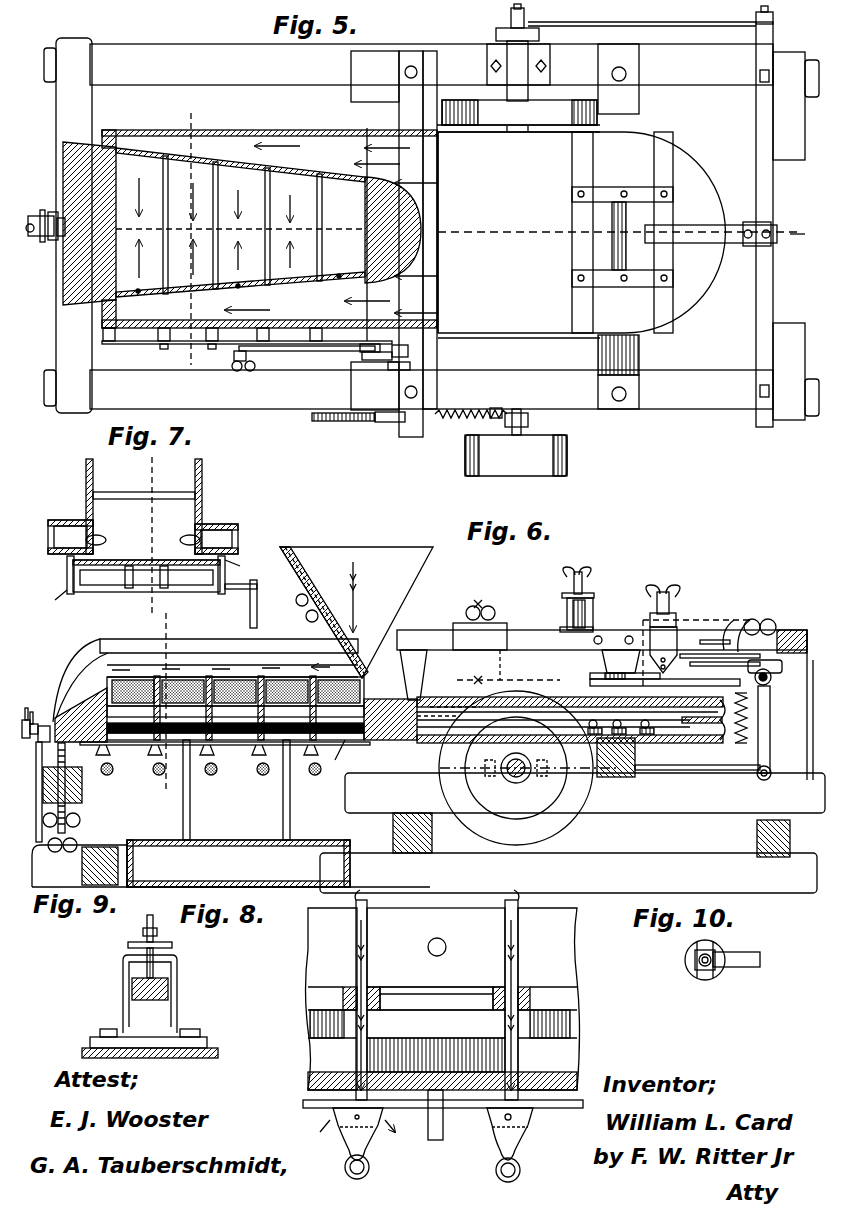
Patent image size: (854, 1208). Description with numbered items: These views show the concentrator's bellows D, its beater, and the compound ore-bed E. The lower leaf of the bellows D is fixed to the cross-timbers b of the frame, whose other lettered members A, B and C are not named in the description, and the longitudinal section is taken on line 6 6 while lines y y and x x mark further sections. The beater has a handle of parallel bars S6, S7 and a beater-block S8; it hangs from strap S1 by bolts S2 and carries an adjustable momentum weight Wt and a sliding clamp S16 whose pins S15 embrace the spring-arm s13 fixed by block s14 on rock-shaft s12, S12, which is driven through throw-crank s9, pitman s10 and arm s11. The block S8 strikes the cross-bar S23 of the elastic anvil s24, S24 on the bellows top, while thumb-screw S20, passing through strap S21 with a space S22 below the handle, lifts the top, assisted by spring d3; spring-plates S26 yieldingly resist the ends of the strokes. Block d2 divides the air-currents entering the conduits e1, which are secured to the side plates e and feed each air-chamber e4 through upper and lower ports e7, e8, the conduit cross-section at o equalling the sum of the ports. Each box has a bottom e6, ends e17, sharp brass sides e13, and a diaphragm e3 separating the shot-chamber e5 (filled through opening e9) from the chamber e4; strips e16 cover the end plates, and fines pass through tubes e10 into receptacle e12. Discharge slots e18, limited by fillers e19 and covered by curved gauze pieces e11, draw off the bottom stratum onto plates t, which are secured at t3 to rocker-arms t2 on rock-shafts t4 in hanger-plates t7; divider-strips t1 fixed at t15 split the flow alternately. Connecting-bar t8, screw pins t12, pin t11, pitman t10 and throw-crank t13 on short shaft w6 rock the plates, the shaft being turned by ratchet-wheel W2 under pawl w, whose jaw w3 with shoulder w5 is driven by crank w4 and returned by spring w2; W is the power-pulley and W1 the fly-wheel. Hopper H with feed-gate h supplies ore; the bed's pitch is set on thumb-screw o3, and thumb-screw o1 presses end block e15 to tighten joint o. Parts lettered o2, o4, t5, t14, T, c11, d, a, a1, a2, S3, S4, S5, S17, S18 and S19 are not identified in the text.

In FIG. 5, the frame side rail A is at (408, 225).
In FIG. 5, the cross block B is at (375, 230).
In FIG. 5, the cross-timbers of the frame b is at (519, 240).
In FIG. 7, the cross-timbers of the frame b is at (585, 793).
In FIG. 6, the cross-timbers of the frame b is at (616, 771).
In FIG. 5, the end block C is at (796, 236).
In FIG. 5, the bellows D is at (619, 235).
In FIG. 5, the power-pulley W is at (516, 455).
In FIG. 5, the fly-wheel W1 is at (518, 116).
In FIG. 6, the fly-wheel W1 is at (529, 768).
In FIG. 5, the ratchet-wheel W2 is at (358, 427).
In FIG. 5, the pawl w is at (485, 242).
In FIG. 5, the spiral spring w2 is at (450, 420).
In FIG. 5, the jaw of the pawl w3 is at (514, 410).
In FIG. 5, the crank w4 is at (528, 420).
In FIG. 5, the shoulder of the jaw w5 is at (481, 402).
In FIG. 5, the short shaft w6 is at (410, 366).
In FIG. 5, the adjustable throw-crank s9 is at (524, 10).
In FIG. 10, the adjustable throw-crank s9 is at (692, 966).
In FIG. 5, the pitman s10 is at (642, 14).
In FIG. 6, the pitman s10 is at (697, 760).
In FIG. 10, the pitman s10 is at (745, 967).
In FIG. 5, the arm s11 is at (773, 30).
In FIG. 6, the arm s11 is at (765, 733).
In FIG. 5, the rock-shaft s12 is at (773, 190).
In FIG. 5, the spring-arm s13 is at (711, 234).
In FIG. 5, the block s14 is at (766, 226).
In FIG. 5, the elastic anvil end bars s24 is at (622, 232).
In FIG. 5, the section line 6 6 is at (804, 235).
In FIG. 7, the side pieces e is at (205, 593).
In FIG. 5, the air-conduits e1 is at (278, 230).
In FIG. 7, the air-conduits e1 is at (146, 568).
In FIG. 8, the lower wire-gauze diaphragm e3 is at (436, 947).
In FIG. 5, the air-chamber e4 is at (240, 225).
In FIG. 7, the air-chamber e4 is at (171, 775).
In FIG. 8, the air-chamber e4 is at (568, 1025).
In FIG. 8, the shot-chamber e5 is at (443, 999).
In FIG. 7, the bottom e6 is at (230, 719).
In FIG. 8, the bottom e6 is at (442, 1080).
In FIG. 5, the upper air-entrance port e7 is at (236, 228).
In FIG. 7, the upper air-entrance port e7 is at (177, 537).
In FIG. 8, the upper air-entrance port e7 is at (436, 1024).
In FIG. 5, the lower air-entrance port e8 is at (287, 223).
In FIG. 7, the lower air-entrance port e8 is at (215, 657).
In FIG. 5, the opening e9 is at (237, 299).
In FIG. 8, the opening e9 is at (446, 947).
In FIG. 7, the tubes e10 is at (224, 790).
In FIG. 7, the curved gauze pieces e11 is at (380, 895).
In FIG. 8, the curved gauze pieces e11 is at (518, 902).
In FIG. 7, the receptacle e12 is at (238, 863).
In FIG. 7, the brass side pieces e13 is at (132, 508).
In FIG. 8, the brass side pieces e13 is at (436, 1000).
In FIG. 5, the end block e15 is at (250, 229).
In FIG. 7, the end block e15 is at (81, 715).
In FIG. 7, the strips e16 is at (198, 563).
In FIG. 5, the end pieces e17 is at (223, 225).
In FIG. 5, the discharge slots e18 is at (336, 217).
In FIG. 8, the discharge slots e18 is at (437, 1009).
In FIG. 5, the fillers e19 is at (240, 230).
In FIG. 7, the fillers e19 is at (143, 526).
In FIG. 5, the joint o is at (197, 227).
In FIG. 7, the joint o is at (340, 757).
In FIG. 5, the thumb-screw o1 is at (46, 240).
In FIG. 7, the thumb-screw o1 is at (30, 708).
In FIG. 7, the bracket o2 is at (38, 746).
In FIG. 5, the thumb-screw o3 is at (55, 236).
In FIG. 7, the thumb-screw o3 is at (184, 805).
In FIG. 7, the roller o4 is at (52, 821).
In FIG. 7, the plates t is at (145, 571).
In FIG. 8, the plates t is at (369, 1167).
In FIG. 8, the divider-strips t1 is at (577, 1125).
In FIG. 7, the rocker-arms t2 is at (146, 673).
In FIG. 8, the rocker-arms t2 is at (533, 1130).
In FIG. 7, the plate securing point t3 is at (225, 753).
In FIG. 8, the plate securing point t3 is at (505, 1118).
In FIG. 7, the rock-shafts t4 is at (241, 683).
In FIG. 8, the rock-shafts t4 is at (520, 1170).
In FIG. 5, the block t5 is at (103, 334).
In FIG. 7, the block t5 is at (268, 605).
In FIG. 7, the hanger-plates t7 is at (139, 571).
In FIG. 5, the connecting-bar t8 is at (188, 353).
In FIG. 5, the pitman t10 is at (307, 357).
In FIG. 5, the pin t11 is at (240, 371).
In FIG. 5, the connecting-screw pins t12 is at (247, 352).
In FIG. 5, the adjustable throw-crank t13 is at (379, 339).
In FIG. 5, the lug t14 is at (390, 346).
In FIG. 7, the divider-strip securing point t15 is at (149, 582).
In FIG. 8, the valve T is at (443, 1130).
In FIG. 5, the section line y y is at (187, 233).
In FIG. 7, the section line y y is at (185, 693).
In FIG. 7, the hopper H is at (356, 612).
In FIG. 7, the feed-gate h is at (300, 575).
In FIG. 7, the compound ore-bed E is at (235, 691).
In FIG. 7, the plate c11 is at (235, 689).
In FIG. 6, the roller d is at (570, 720).
In FIG. 7, the semicircular block d2 is at (372, 740).
In FIG. 6, the spring d3 is at (733, 729).
In FIG. 7, the base a is at (240, 850).
In FIG. 6, the base a is at (568, 856).
In FIG. 7, the block a1 is at (82, 790).
In FIG. 7, the screw a2 is at (80, 828).
In FIG. 6, the section line x x is at (611, 637).
In FIG. 6, the strap S1 is at (413, 675).
In FIG. 6, the bolts S2 is at (605, 705).
In FIG. 6, the pin S3 is at (508, 622).
In FIG. 6, the pin S4 is at (502, 665).
In FIG. 6, the rollers S5 is at (496, 608).
In FIG. 6, the beater-handle bar S7 is at (700, 675).
In FIG. 9, the beater-handle bar S7 is at (168, 990).
In FIG. 6, the beater-block S8 is at (583, 639).
In FIG. 6, the rock-shaft S12 is at (771, 677).
In FIG. 6, the pins S15 is at (676, 675).
In FIG. 6, the adjustable sliding clamp S16 is at (663, 650).
In FIG. 6, the wing nut S17 is at (672, 590).
In FIG. 6, the collar S18 is at (676, 614).
In FIG. 6, the bar S19 is at (720, 654).
In FIG. 6, the thumb-screw S20 is at (590, 574).
In FIG. 9, the thumb-screw S20 is at (157, 932).
In FIG. 6, the strap S21 is at (580, 636).
In FIG. 9, the strap S21 is at (177, 970).
In FIG. 6, the space S22 is at (593, 627).
In FIG. 9, the space S22 is at (147, 965).
In FIG. 6, the cross-bar of elastic anvil S23 is at (780, 608).
In FIG. 6, the elastic anvil S24 is at (732, 675).
In FIG. 6, the spring-plates S26 is at (748, 615).
In FIG. 9, the beater-handle bar S6 is at (132, 990).
In FIG. 6, the adjustable momentum weight Wt is at (480, 636).